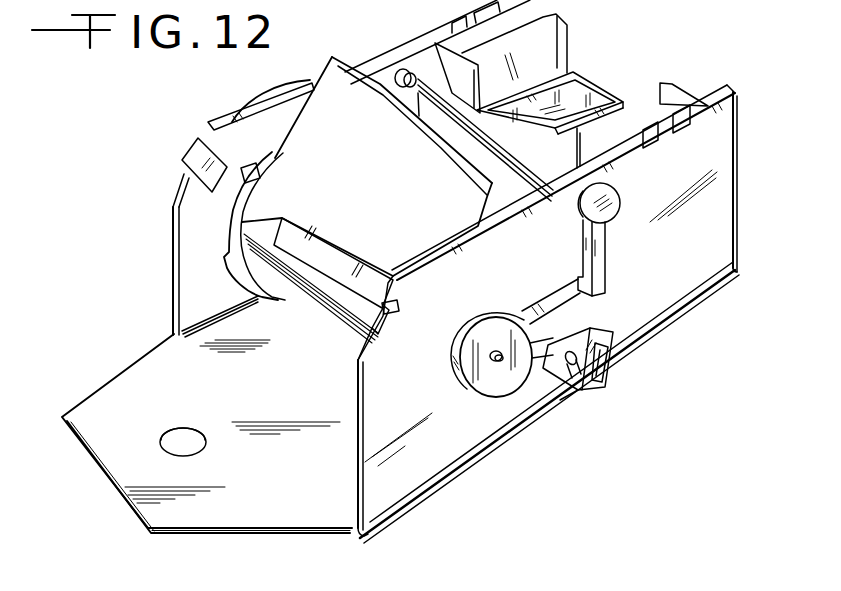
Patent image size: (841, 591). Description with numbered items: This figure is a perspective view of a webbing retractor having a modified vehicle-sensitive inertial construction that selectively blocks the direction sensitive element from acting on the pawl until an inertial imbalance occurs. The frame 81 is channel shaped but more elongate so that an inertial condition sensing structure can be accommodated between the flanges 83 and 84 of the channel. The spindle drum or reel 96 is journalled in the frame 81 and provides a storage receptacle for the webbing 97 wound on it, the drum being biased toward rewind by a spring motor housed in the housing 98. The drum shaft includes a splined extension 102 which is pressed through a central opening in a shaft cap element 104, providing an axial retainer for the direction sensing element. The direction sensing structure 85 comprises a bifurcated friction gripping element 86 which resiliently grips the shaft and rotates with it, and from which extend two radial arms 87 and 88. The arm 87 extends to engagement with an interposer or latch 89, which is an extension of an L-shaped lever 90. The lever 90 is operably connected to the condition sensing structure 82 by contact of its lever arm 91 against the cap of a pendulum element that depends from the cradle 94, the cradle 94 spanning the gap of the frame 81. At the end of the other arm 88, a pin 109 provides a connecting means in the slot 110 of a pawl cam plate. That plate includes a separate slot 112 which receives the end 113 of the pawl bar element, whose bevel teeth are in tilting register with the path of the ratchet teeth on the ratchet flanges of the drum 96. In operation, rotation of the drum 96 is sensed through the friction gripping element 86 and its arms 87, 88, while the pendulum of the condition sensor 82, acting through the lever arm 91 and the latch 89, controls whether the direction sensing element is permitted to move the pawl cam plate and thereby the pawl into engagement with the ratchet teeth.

The frame 81 is at (346, 520).
The condition sensing structure 82 is at (647, 70).
The flange 83 is at (386, 57).
The flange 84 is at (727, 233).
The direction sensing structure 85 is at (466, 408).
The bifurcated friction gripping element 86 is at (491, 306).
The radial arm 87 is at (531, 306).
The radial arm 88 is at (531, 362).
The interposer or latch 89 is at (603, 262).
The L-shaped lever 90 is at (631, 189).
The lever arm 91 is at (595, 84).
The cradle 94 is at (556, 35).
The spindle drum or reel 96 is at (243, 147).
The webbing 97 is at (367, 208).
The housing 98 is at (268, 91).
The splined extension 102 is at (492, 358).
The shaft cap element 104 is at (480, 336).
The pin 109 is at (590, 328).
The slot 110 is at (577, 384).
The slot 112 is at (578, 387).
The end of pawl bar element 113 is at (604, 372).